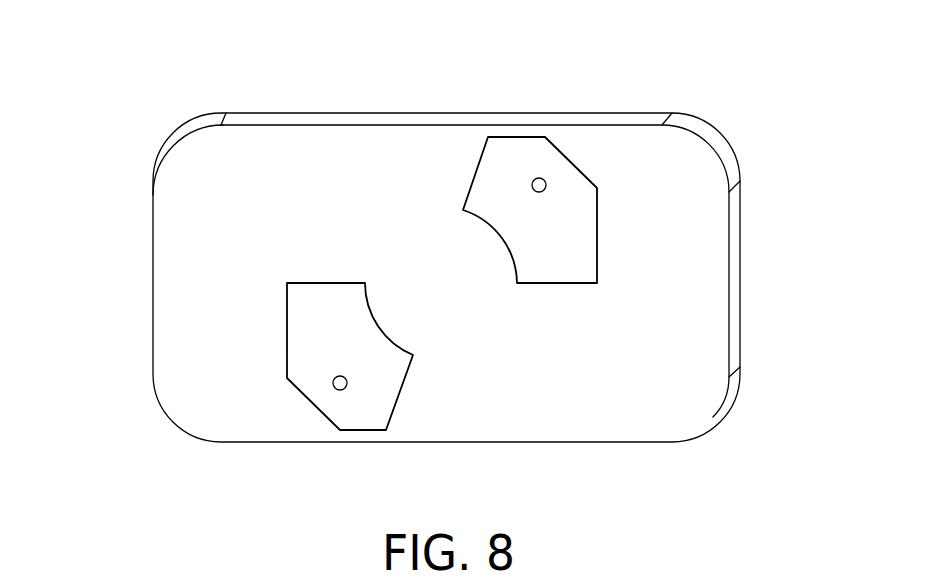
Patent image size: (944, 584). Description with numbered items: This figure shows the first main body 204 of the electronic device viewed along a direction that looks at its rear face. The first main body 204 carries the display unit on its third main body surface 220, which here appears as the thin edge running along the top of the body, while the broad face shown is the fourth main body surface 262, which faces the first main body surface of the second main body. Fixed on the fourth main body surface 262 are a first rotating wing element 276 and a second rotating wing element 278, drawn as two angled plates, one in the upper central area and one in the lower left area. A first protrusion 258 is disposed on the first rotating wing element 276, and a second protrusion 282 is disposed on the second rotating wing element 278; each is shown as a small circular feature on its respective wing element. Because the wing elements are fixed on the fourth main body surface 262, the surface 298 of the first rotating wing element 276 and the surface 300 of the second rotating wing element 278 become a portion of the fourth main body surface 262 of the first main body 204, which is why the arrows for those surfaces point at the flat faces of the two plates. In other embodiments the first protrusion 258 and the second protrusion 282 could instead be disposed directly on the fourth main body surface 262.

The first main body 204 is at (837, 33).
The third main body surface 220 is at (453, 113).
The fourth main body surface 262 is at (688, 200).
The second rotating wing element 278 is at (305, 210).
The second protrusion 282 is at (533, 184).
The surface of the second rotating wing element 300 is at (520, 214).
The first rotating wing element 276 is at (586, 356).
The surface of the first rotating wing element 298 is at (377, 364).
The first protrusion 258 is at (347, 382).